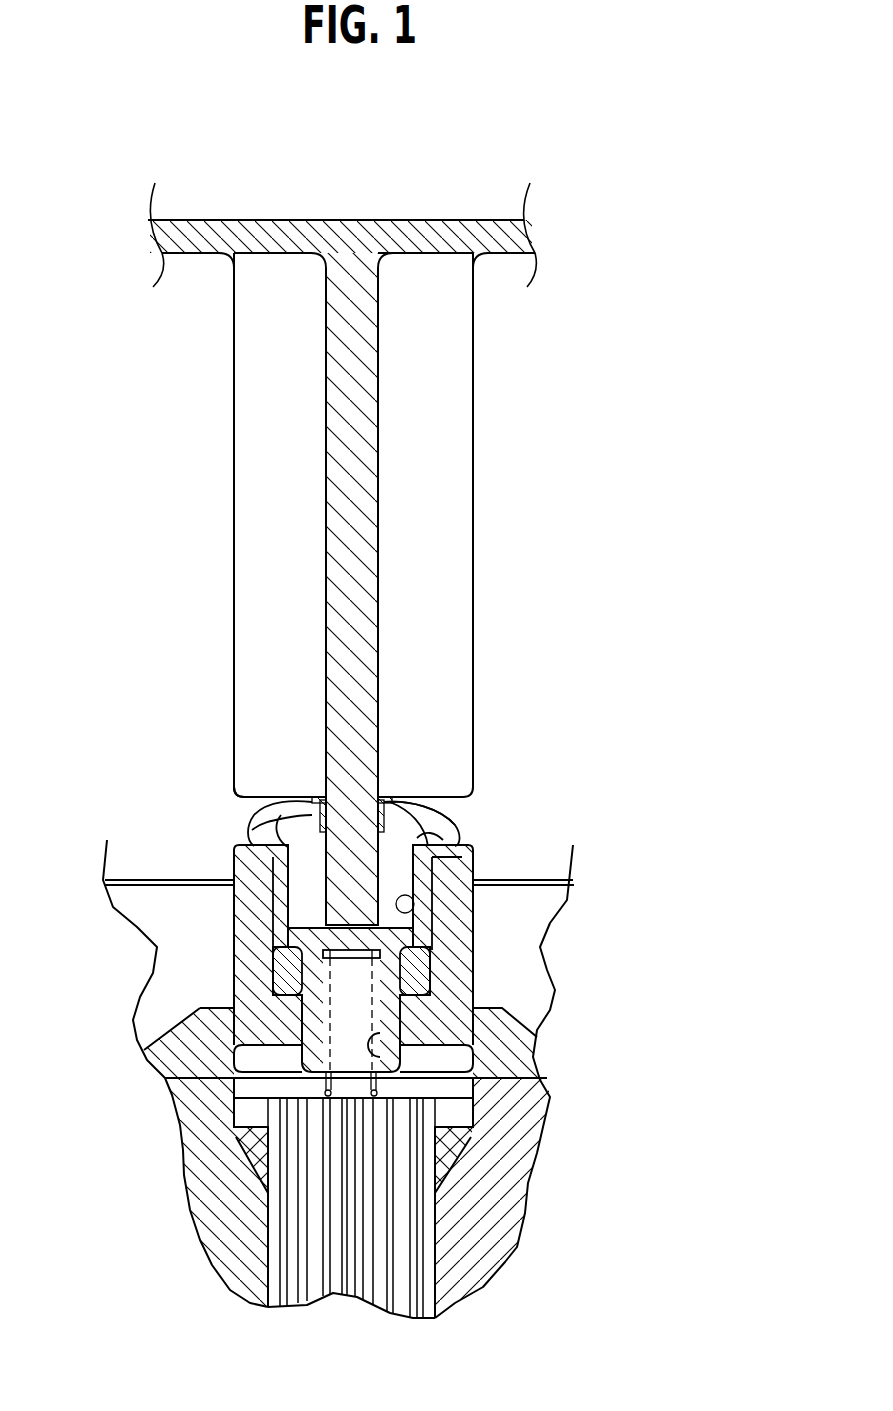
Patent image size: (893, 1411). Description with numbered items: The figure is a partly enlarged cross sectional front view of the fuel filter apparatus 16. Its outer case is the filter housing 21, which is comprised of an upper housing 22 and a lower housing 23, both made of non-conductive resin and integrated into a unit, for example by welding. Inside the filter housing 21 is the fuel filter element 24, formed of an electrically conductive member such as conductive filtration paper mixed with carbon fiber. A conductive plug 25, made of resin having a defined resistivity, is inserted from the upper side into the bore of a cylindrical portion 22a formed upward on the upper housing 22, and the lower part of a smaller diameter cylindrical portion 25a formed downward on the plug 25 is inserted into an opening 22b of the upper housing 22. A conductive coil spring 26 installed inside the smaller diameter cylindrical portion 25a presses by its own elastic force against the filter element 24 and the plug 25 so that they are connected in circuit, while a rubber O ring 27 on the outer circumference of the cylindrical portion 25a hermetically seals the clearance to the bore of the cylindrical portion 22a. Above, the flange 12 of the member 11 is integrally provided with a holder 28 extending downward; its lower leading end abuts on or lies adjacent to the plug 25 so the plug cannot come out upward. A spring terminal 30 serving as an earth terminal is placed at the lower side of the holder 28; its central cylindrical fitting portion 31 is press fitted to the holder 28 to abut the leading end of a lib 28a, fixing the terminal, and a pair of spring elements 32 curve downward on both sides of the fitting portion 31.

The upper movable member 11 is at (562, 202).
The flange 12 is at (257, 220).
The fuel filter apparatus 16 is at (185, 1270).
The filter housing 21 is at (562, 1081).
The upper housing 22 is at (471, 1008).
The cylindrical portion 22a is at (447, 963).
The opening 22b is at (234, 1062).
The lower housing 23 is at (487, 1240).
The fuel filter element 24 is at (383, 1188).
The conductive plug 25 is at (414, 905).
The smaller diameter cylindrical portion 25a is at (300, 1018).
The conductive coil spring 26 is at (380, 1068).
The rubber O ring 27 is at (288, 968).
The holder 28 is at (381, 480).
The lib 28a is at (234, 772).
The spring terminal 30 is at (458, 806).
The cylindrical fitting portion 31 is at (312, 804).
The spring elements 32 is at (443, 827).